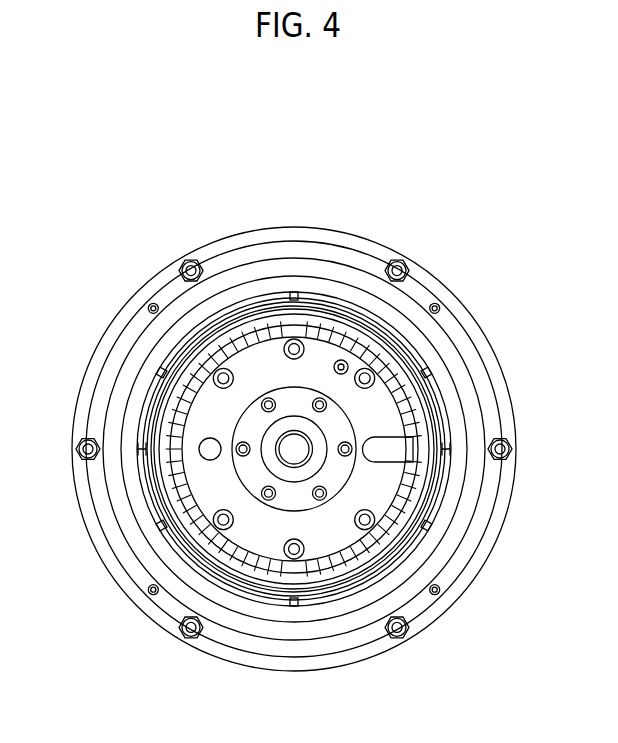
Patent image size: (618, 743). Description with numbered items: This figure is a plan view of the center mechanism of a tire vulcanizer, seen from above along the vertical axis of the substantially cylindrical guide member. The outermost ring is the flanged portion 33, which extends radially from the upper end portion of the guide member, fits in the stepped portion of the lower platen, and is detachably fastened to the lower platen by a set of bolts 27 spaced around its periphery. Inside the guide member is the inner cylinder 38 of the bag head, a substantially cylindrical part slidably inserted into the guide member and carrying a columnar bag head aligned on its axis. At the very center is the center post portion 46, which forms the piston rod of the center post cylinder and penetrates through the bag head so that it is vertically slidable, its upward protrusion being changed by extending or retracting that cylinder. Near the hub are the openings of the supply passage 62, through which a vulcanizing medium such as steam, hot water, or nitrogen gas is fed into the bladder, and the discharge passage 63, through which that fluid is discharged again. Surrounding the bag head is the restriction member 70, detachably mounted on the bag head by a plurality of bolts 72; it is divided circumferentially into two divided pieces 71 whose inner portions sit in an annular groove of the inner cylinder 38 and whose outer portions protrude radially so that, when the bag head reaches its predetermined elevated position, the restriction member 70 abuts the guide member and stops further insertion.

The bolt 27 is at (190, 259).
The flanged portion 33 is at (502, 388).
The inner cylinder 38 is at (343, 537).
The center post portion 46 is at (296, 428).
The supply passage 62 is at (200, 445).
The discharge passage 63 is at (413, 440).
The restriction member 70 is at (294, 449).
The divided piece 71 is at (450, 393).
The bolt 72 is at (158, 370).